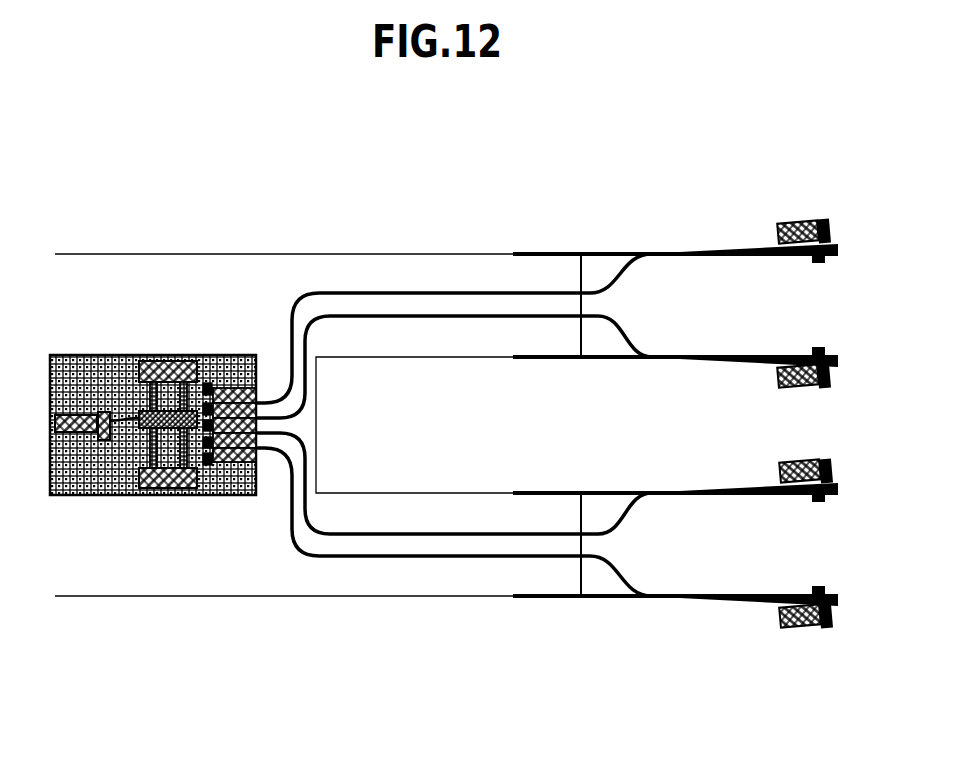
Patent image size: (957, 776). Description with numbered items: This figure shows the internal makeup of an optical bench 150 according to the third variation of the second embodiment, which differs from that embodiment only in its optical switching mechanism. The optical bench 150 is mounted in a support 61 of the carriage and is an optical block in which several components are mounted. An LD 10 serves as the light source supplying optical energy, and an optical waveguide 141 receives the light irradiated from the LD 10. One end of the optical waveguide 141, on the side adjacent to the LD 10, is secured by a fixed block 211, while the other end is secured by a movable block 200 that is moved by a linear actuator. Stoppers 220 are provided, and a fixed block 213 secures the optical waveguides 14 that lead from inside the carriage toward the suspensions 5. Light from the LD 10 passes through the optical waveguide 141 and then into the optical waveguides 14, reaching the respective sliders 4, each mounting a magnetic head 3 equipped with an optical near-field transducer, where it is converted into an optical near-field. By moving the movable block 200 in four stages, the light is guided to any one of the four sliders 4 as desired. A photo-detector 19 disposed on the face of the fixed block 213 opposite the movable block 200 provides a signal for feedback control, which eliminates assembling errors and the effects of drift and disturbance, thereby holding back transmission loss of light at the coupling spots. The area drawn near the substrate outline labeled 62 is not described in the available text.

The movable block 200 is at (135, 415).
The stoppers 220 is at (158, 372).
The optical bench 150 is at (213, 383).
The fixed block 213 is at (233, 386).
The substrate 62 is at (425, 275).
The support 61 is at (68, 570).
The LD 10 is at (78, 432).
The fixed block 211 is at (105, 443).
The optical waveguide 141 is at (122, 428).
The photo-detector 19 is at (207, 467).
The optical waveguides 14 is at (637, 267).
The suspension 5 is at (686, 251).
The slider 4 is at (793, 221).
The magnetic head 3 is at (822, 218).